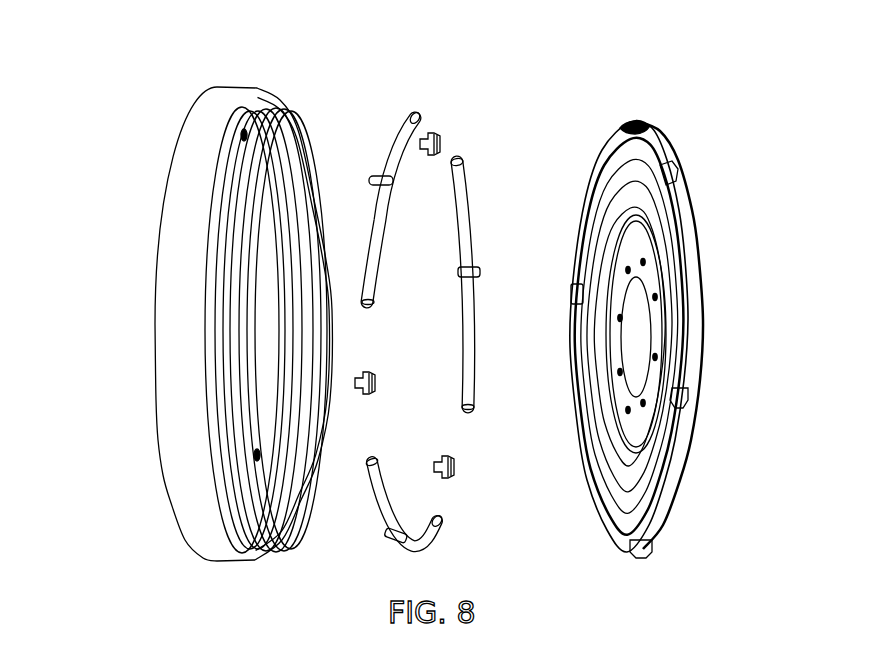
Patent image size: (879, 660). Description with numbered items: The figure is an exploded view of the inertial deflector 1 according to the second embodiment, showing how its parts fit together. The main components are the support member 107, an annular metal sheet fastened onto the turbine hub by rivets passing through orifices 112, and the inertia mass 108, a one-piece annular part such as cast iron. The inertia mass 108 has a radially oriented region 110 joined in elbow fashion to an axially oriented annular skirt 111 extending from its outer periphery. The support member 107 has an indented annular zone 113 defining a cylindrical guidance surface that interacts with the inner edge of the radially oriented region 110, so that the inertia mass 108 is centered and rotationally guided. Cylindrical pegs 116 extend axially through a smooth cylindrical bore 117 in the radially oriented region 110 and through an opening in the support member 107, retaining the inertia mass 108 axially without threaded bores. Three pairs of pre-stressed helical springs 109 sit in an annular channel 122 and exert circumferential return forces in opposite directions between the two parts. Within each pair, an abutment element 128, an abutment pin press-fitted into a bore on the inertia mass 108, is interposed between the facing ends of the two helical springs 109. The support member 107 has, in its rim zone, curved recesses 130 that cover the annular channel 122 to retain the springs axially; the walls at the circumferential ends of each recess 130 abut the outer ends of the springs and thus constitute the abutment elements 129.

The inertial deflector 1 is at (770, 88).
The support member 107 is at (721, 229).
The inertia mass 108 is at (137, 325).
The helical springs 109 is at (470, 213).
The radially oriented region 110 is at (245, 164).
The axially oriented annular skirt 111 is at (198, 150).
The orifices 112 is at (655, 297).
The indented annular zone 113 is at (617, 492).
The pegs 116 is at (456, 473).
The smooth cylindrical bore 117 is at (259, 462).
The annular channel 122 is at (250, 127).
The abutment element 128 is at (381, 172).
The abutment elements 129 is at (632, 124).
The recesses 130 is at (685, 365).